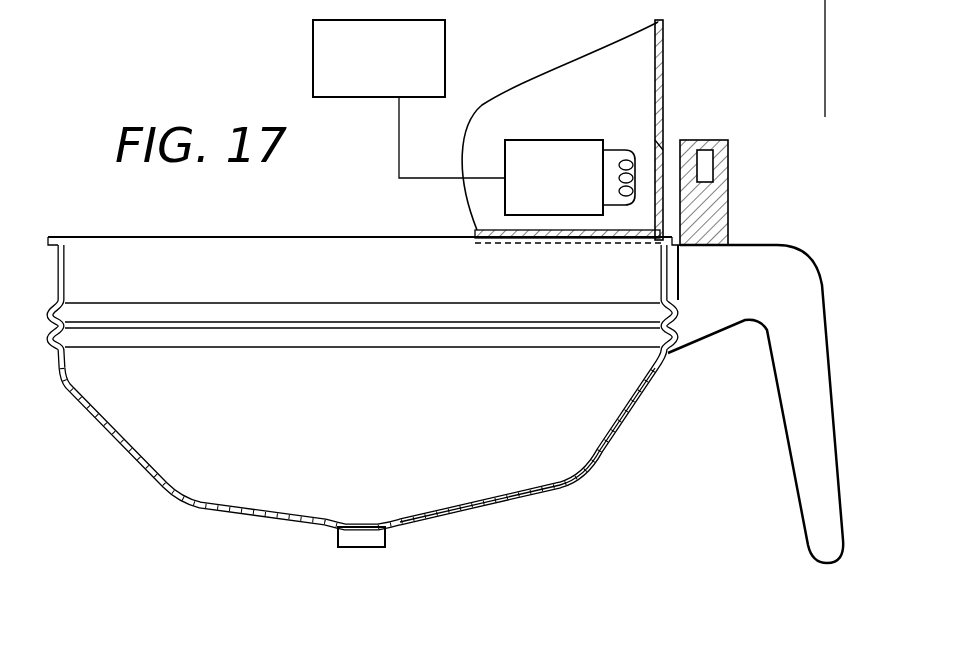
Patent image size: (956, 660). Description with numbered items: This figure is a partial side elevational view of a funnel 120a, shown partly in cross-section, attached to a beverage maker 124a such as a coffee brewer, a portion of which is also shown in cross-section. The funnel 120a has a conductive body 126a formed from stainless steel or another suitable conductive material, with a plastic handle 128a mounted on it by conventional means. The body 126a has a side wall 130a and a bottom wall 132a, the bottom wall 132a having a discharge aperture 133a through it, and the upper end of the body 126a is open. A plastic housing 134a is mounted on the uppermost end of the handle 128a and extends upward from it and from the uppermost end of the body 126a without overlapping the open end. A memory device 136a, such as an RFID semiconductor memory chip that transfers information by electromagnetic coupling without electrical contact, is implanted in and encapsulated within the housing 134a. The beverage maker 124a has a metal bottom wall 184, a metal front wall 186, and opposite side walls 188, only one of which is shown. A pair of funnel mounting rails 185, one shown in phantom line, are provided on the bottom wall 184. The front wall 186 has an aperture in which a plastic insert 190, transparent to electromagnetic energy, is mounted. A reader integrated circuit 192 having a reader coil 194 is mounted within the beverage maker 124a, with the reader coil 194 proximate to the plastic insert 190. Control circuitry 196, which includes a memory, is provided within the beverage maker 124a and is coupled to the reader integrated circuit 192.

The control circuitry 196 is at (313, 58).
The front wall 186 is at (660, 22).
The side walls 188 is at (482, 157).
The reader integrated circuit 192 is at (555, 140).
The reader coil 194 is at (612, 207).
The beverage maker 124a is at (665, 80).
The plastic insert 190 is at (665, 145).
The housing 134a is at (730, 192).
The memory device 136a is at (713, 165).
The bottom wall 184 is at (507, 228).
The funnel mounting rails 185 is at (570, 243).
The funnel 120a is at (658, 403).
The side wall 130a is at (633, 427).
The conductive body 126a is at (608, 457).
The bottom wall 132a is at (492, 506).
The discharge aperture 133a is at (370, 548).
The handle 128a is at (797, 365).